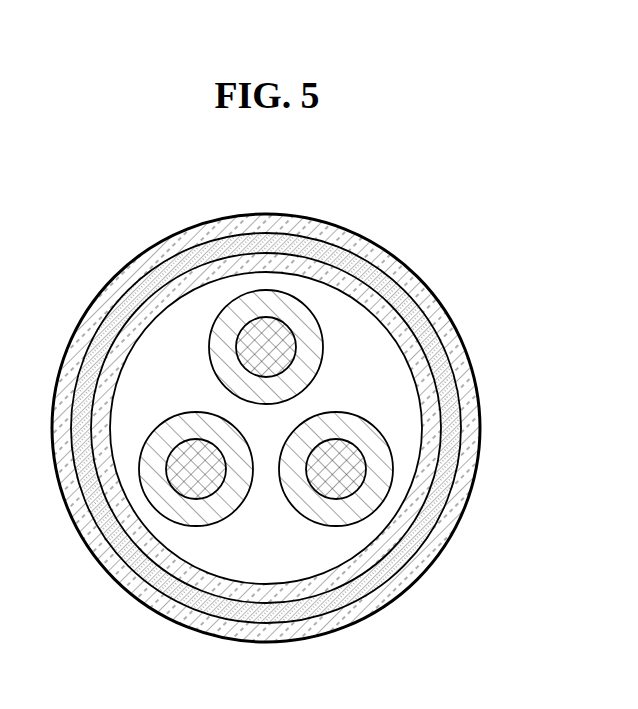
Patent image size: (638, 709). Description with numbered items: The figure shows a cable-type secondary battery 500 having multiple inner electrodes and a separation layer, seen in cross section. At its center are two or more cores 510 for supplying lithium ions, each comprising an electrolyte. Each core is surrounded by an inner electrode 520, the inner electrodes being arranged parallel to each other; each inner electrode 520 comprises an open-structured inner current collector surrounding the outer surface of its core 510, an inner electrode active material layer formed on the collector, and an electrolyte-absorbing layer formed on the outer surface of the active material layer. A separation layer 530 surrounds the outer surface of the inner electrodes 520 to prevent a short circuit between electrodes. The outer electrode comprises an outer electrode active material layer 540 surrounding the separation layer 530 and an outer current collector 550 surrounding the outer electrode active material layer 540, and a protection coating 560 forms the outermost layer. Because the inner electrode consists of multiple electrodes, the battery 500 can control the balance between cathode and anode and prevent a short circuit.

The cable-type secondary battery 500 is at (435, 217).
The core for supplying lithium ions 510 is at (258, 338).
The inner electrode 520 is at (283, 307).
The separation layer 530 is at (383, 345).
The outer electrode active material layer 540 is at (417, 363).
The outer current collector 550 is at (448, 390).
The protection coating 560 is at (465, 420).